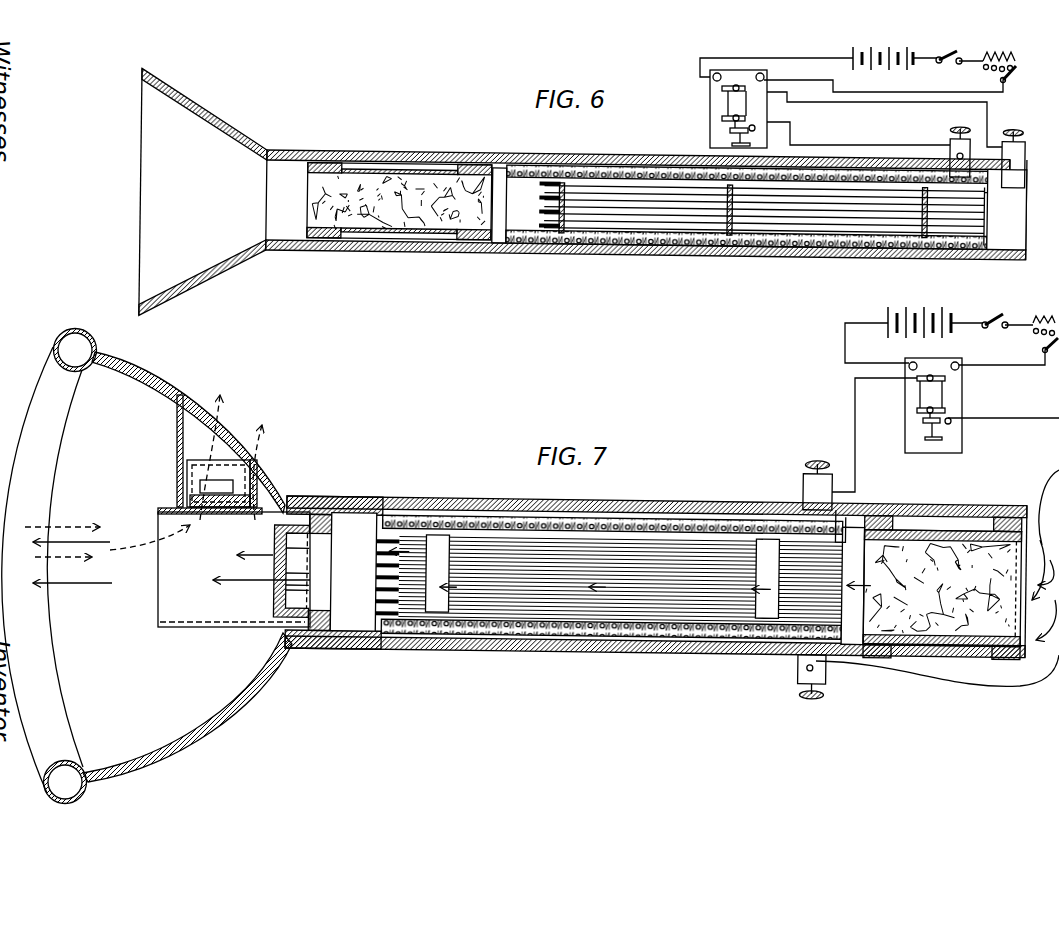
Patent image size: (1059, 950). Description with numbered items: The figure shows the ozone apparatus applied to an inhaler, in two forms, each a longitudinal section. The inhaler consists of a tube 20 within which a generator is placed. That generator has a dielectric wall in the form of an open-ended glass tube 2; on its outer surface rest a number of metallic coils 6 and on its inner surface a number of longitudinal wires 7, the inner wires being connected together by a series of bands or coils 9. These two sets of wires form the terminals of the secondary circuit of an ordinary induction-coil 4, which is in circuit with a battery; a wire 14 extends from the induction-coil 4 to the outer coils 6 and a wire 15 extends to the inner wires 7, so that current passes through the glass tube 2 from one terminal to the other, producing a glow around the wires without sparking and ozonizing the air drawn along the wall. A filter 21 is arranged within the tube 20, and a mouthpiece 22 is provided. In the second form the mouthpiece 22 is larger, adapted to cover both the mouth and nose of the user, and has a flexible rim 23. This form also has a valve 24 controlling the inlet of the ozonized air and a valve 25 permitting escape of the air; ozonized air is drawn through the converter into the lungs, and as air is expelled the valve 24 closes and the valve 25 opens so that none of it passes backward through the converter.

In FIG. 6, the glass tube 2 is at (724, 240).
In FIG. 7, the glass tube 2 is at (743, 630).
In FIG. 6, the induction-coil 4 is at (728, 101).
In FIG. 7, the induction-coil 4 is at (940, 400).
In FIG. 6, the metallic coils 6 is at (747, 240).
In FIG. 7, the metallic coils 6 is at (487, 642).
In FIG. 6, the longitudinal wires 7 is at (817, 226).
In FIG. 7, the longitudinal wires 7 is at (571, 620).
In FIG. 6, the bands or coils 9 is at (977, 207).
In FIG. 7, the bands or coils 9 is at (432, 612).
In FIG. 6, the wire 14 is at (885, 143).
In FIG. 7, the wire 14 is at (1058, 468).
In FIG. 6, the wire 15 is at (993, 120).
In FIG. 7, the wire 15 is at (856, 466).
In FIG. 6, the tube 20 is at (660, 250).
In FIG. 7, the tube 20 is at (643, 650).
In FIG. 6, the filter 21 is at (440, 218).
In FIG. 7, the filter 21 is at (950, 612).
In FIG. 6, the mouthpiece 22 is at (200, 273).
In FIG. 7, the mouthpiece 22 is at (214, 716).
In FIG. 7, the flexible rim 23 is at (84, 790).
In FIG. 7, the valve 24 is at (285, 592).
In FIG. 7, the valve 25 is at (250, 496).